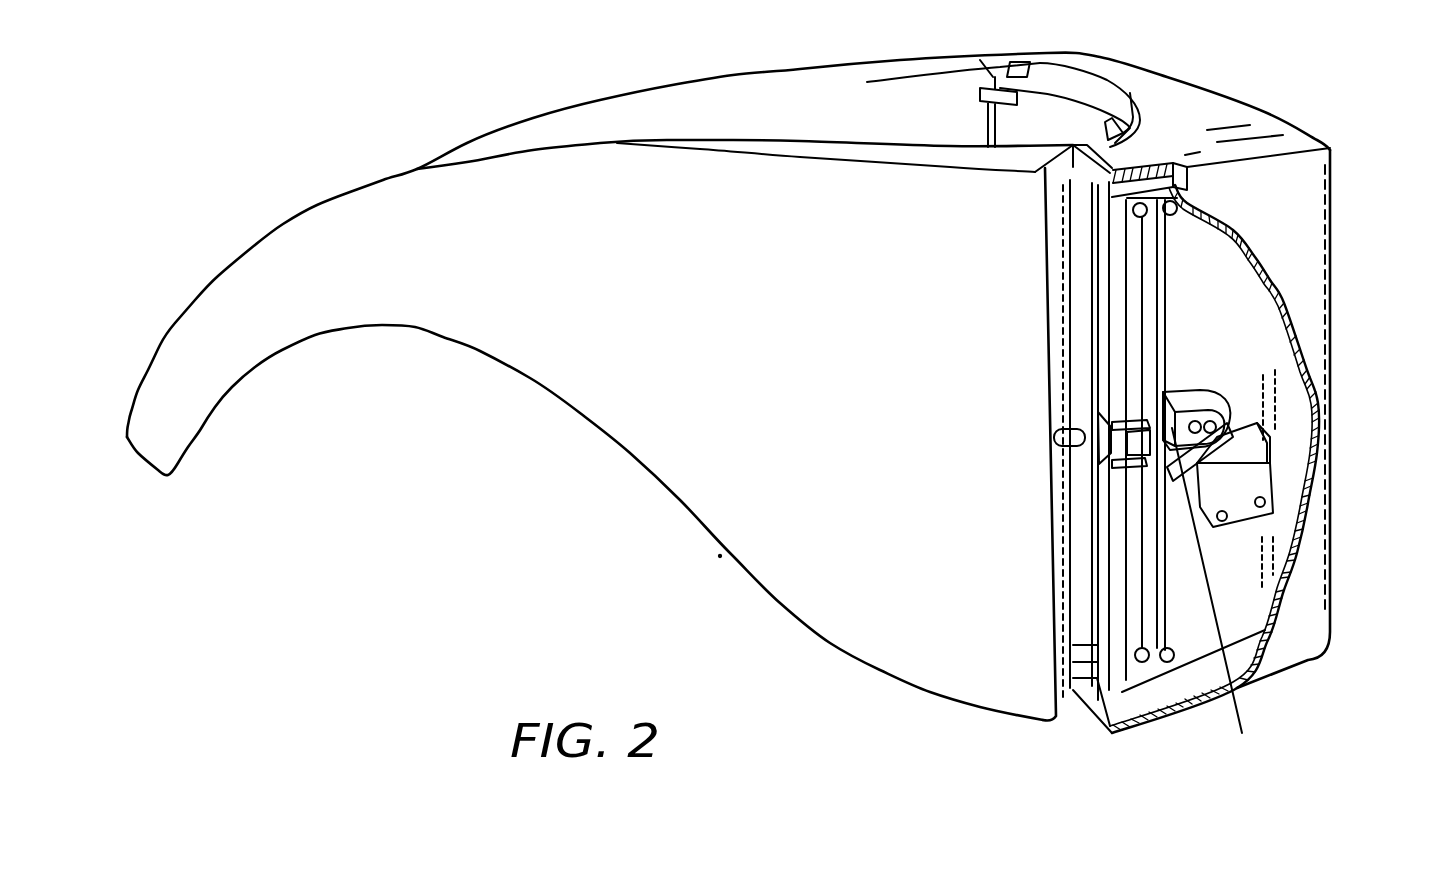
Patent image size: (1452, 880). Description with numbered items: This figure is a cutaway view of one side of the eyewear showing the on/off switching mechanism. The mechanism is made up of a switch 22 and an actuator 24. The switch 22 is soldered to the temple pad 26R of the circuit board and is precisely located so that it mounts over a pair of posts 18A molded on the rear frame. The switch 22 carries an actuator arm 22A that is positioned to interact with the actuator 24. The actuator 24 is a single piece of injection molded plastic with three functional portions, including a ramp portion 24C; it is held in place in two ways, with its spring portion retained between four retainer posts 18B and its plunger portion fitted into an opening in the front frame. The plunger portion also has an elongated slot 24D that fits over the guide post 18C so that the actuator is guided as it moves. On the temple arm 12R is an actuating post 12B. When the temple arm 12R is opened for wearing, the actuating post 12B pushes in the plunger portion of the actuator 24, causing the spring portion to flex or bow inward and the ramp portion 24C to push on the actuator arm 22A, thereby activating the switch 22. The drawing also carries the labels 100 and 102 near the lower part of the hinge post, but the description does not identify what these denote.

The temple arm 12R is at (383, 240).
The actuating post 12B is at (1053, 446).
The posts 18A is at (1263, 505).
The retainer posts 18B is at (1148, 215).
The guide post 18C is at (1212, 417).
The switch 22 is at (1263, 488).
The actuator arm 22A is at (1267, 443).
The actuator 24 is at (1222, 415).
The ramp portion 24C is at (1242, 733).
The elongated slot 24D is at (1190, 413).
The temple pad 26R is at (1276, 357).
The notch 100 is at (1100, 460).
The bottom step 102 is at (1084, 688).